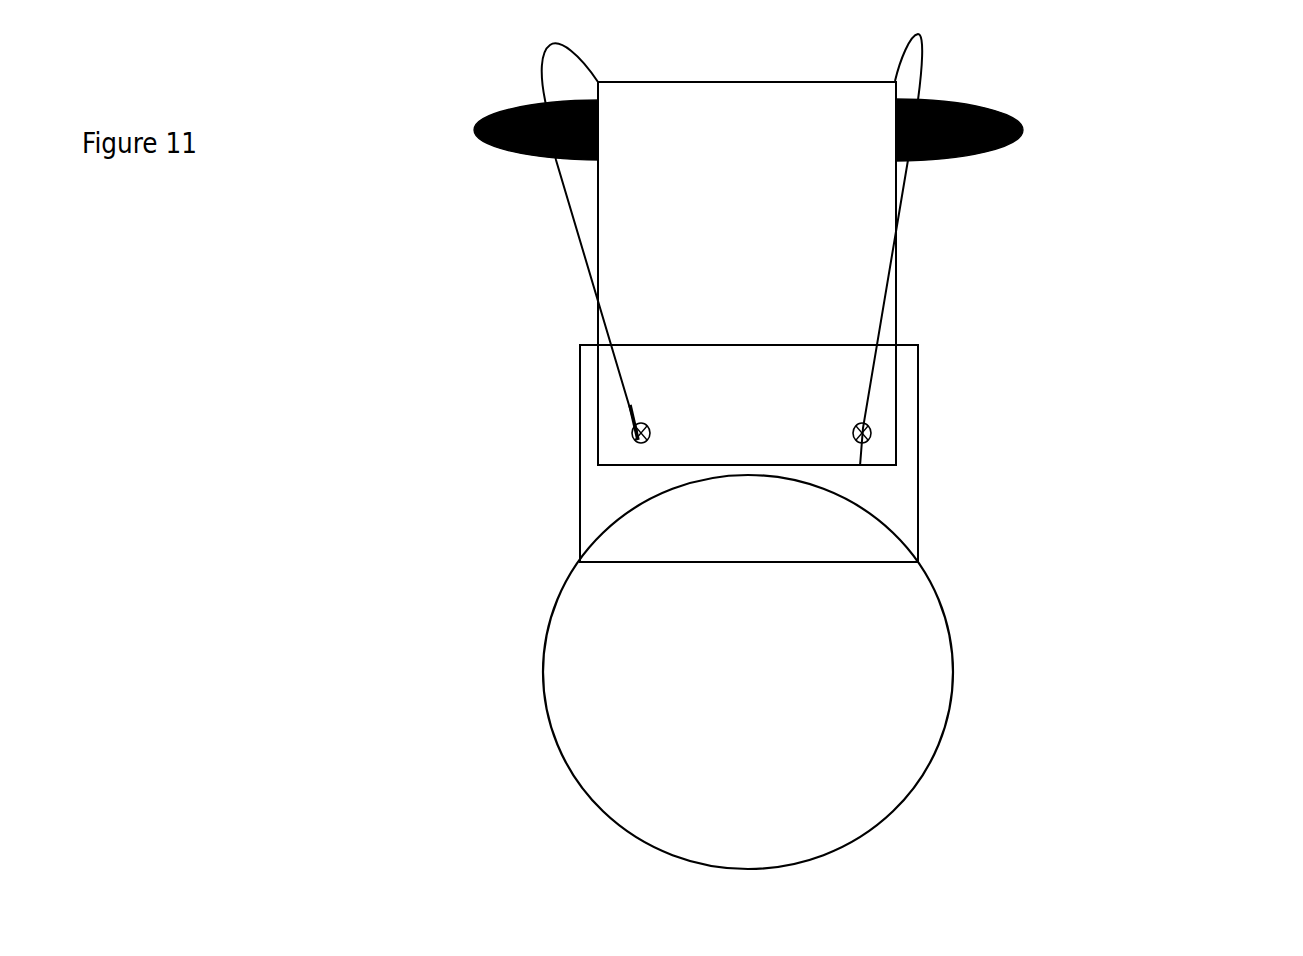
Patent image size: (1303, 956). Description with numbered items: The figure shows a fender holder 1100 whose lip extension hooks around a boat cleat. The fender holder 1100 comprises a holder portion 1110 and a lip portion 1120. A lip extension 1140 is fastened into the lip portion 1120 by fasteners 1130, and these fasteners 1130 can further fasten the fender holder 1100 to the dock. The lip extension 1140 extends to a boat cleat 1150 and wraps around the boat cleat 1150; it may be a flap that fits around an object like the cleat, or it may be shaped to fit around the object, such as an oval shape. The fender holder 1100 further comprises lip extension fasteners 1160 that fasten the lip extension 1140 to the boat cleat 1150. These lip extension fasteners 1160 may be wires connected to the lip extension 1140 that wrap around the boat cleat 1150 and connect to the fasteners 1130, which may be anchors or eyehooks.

The fender holder 1100 is at (818, 451).
The holder portion 1110 is at (542, 647).
The lip portion 1120 is at (580, 452).
The fasteners 1130 is at (648, 440).
The lip extension 1140 is at (897, 308).
The boat cleat 1150 is at (1025, 129).
The lip extension fasteners 1160 is at (910, 182).